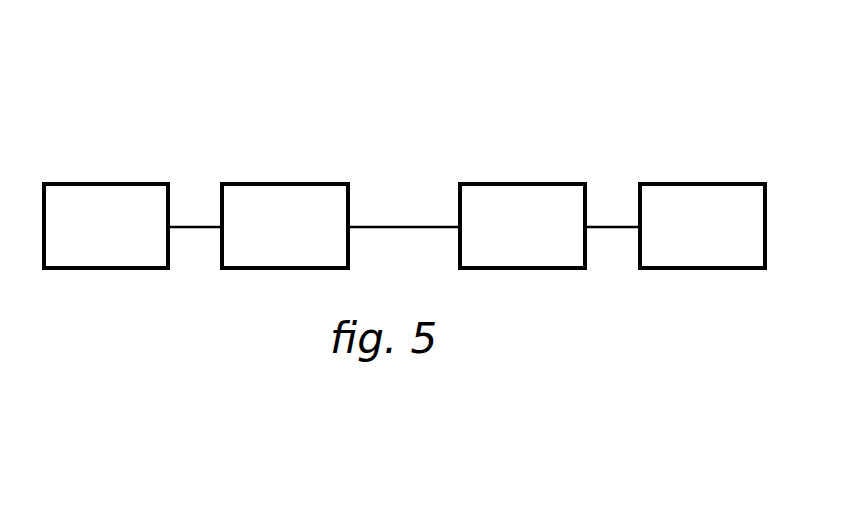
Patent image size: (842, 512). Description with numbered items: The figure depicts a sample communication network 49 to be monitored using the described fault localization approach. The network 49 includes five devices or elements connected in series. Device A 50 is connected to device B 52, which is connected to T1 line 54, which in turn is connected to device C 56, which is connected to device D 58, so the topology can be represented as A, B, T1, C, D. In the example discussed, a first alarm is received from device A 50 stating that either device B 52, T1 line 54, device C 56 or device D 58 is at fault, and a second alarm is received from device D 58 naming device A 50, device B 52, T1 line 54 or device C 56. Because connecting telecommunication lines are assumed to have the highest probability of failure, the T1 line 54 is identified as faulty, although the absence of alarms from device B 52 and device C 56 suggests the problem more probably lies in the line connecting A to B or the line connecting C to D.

The communication network 49 is at (431, 22).
The device A 50 is at (97, 182).
The device B 52 is at (297, 182).
The T1 line 54 is at (430, 225).
The device C 56 is at (525, 182).
The device D 58 is at (710, 182).